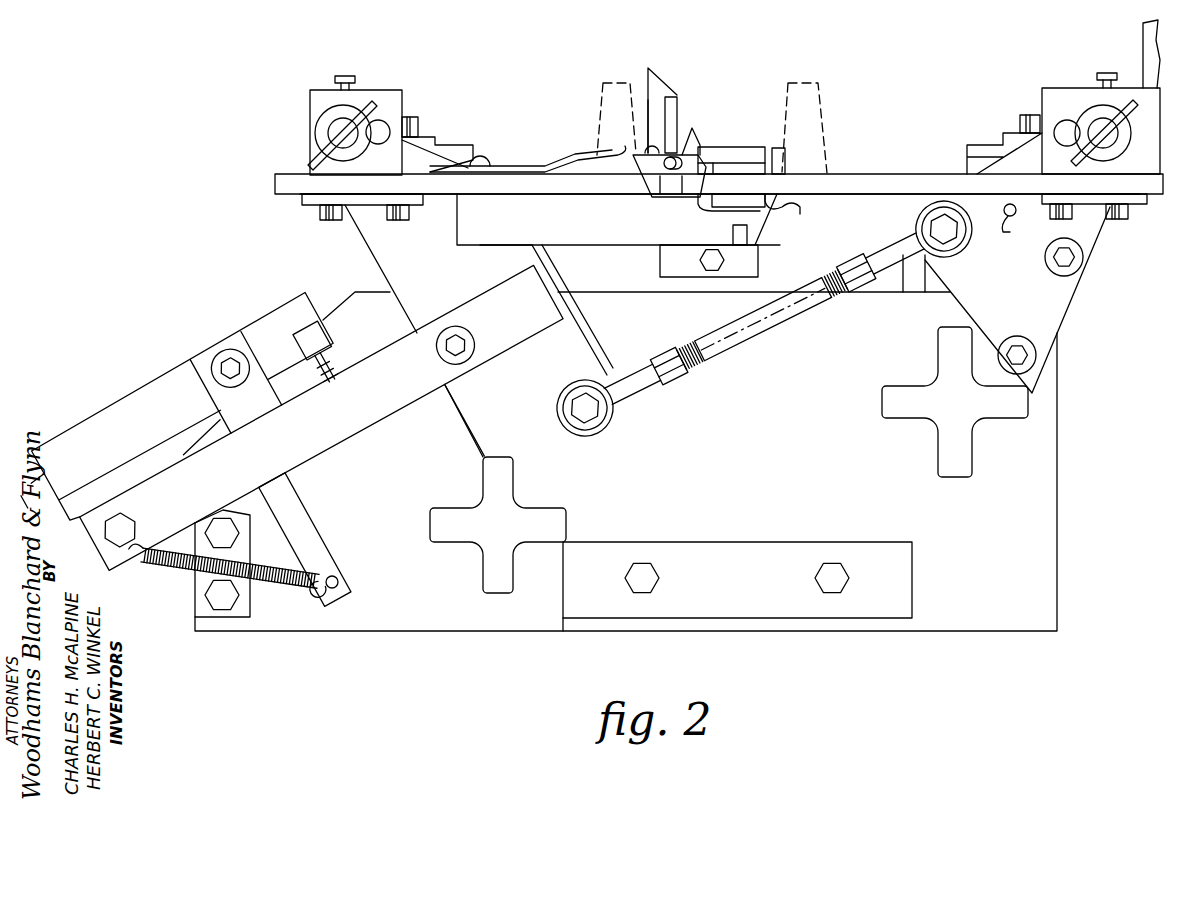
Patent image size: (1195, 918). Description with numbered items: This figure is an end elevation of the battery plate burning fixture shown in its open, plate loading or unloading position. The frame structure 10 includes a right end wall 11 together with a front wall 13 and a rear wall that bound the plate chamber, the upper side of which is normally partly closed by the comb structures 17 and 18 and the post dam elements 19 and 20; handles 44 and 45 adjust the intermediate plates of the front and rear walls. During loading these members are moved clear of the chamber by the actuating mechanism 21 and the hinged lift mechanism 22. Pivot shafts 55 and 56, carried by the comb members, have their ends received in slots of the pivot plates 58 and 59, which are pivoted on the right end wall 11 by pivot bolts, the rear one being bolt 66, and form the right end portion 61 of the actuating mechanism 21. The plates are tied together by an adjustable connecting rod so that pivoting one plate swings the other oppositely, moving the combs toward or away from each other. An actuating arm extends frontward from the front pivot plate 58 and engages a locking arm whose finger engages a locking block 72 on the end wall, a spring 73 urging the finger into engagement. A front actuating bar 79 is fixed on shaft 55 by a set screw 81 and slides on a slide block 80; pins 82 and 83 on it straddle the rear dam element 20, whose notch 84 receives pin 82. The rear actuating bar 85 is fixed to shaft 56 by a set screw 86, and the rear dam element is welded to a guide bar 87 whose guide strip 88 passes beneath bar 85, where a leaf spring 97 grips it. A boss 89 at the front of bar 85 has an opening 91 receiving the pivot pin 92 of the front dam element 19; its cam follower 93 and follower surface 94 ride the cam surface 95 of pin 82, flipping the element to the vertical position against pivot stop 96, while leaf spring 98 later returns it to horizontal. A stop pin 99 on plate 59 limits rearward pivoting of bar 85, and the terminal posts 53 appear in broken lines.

The frame structure 10 is at (992, 656).
The right end wall 11 is at (1057, 540).
The front wall 13 is at (540, 258).
The comb structure 17 is at (452, 150).
The comb structure 18 is at (979, 148).
The front dam element 19 is at (680, 102).
The rear dam element 20 is at (725, 150).
The actuating mechanism 21 is at (315, 449).
The hinged lift mechanism 22 is at (858, 164).
The handle 44 is at (553, 519).
The handle 45 is at (935, 418).
The terminal posts 53 is at (606, 102).
The pivot shaft 55 is at (333, 130).
The pivot shaft 56 is at (1118, 130).
The pivot plate 58 is at (386, 252).
The pivot plate 59 is at (1072, 323).
The right end portion 61 is at (764, 319).
The pivot bolt 66 is at (1026, 358).
The locking block 72 is at (200, 602).
The spring 73 is at (300, 585).
The actuating bar 79 is at (530, 243).
The slide block 80 is at (690, 272).
The set screw 81 is at (352, 82).
The pin 82 is at (700, 146).
The pin 83 is at (778, 154).
The notch 84 is at (706, 186).
The rear actuating bar 85 is at (882, 183).
The set screw 86 is at (1100, 78).
The guide bar 87 is at (808, 200).
The guide strip 88 is at (740, 206).
The boss 89 is at (650, 165).
The opening 91 is at (672, 188).
The pivot pin 92 is at (666, 170).
The cam follower 93 is at (650, 80).
The cam follower surface 94 is at (660, 86).
The cam surface 95 is at (692, 130).
The pivot stop 96 is at (648, 150).
The leaf spring 97 is at (767, 208).
The leaf spring 98 is at (582, 160).
The stop pin 99 is at (1020, 220).